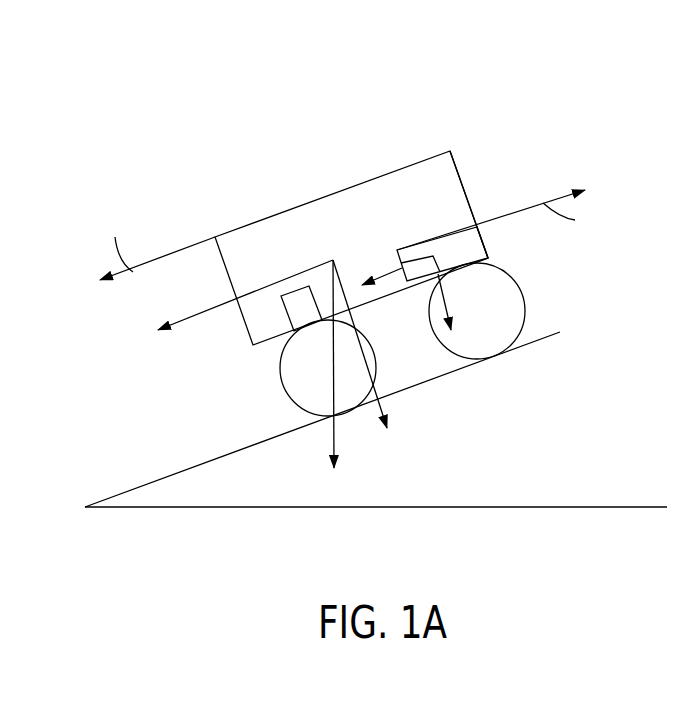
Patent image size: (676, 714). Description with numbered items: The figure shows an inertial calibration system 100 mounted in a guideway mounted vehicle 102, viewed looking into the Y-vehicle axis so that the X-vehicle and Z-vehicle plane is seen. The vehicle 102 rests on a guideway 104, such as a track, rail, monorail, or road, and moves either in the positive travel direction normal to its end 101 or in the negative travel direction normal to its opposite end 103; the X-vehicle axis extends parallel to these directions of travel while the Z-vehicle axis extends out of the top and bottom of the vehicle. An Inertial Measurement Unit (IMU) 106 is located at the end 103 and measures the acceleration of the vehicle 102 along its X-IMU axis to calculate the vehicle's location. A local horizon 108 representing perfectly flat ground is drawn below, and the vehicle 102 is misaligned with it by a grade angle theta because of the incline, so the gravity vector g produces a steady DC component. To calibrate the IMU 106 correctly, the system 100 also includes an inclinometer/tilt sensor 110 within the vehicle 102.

The inertial calibration system 100 is at (128, 132).
The end 101 is at (210, 245).
The guideway mounted vehicle 102 is at (427, 158).
The end 103 is at (455, 162).
The guideway 104 is at (520, 347).
The inertial measurement unit (IMU) 106 is at (480, 238).
The local horizon 108 is at (393, 508).
The inclinometer/tilt sensor 110 is at (292, 287).